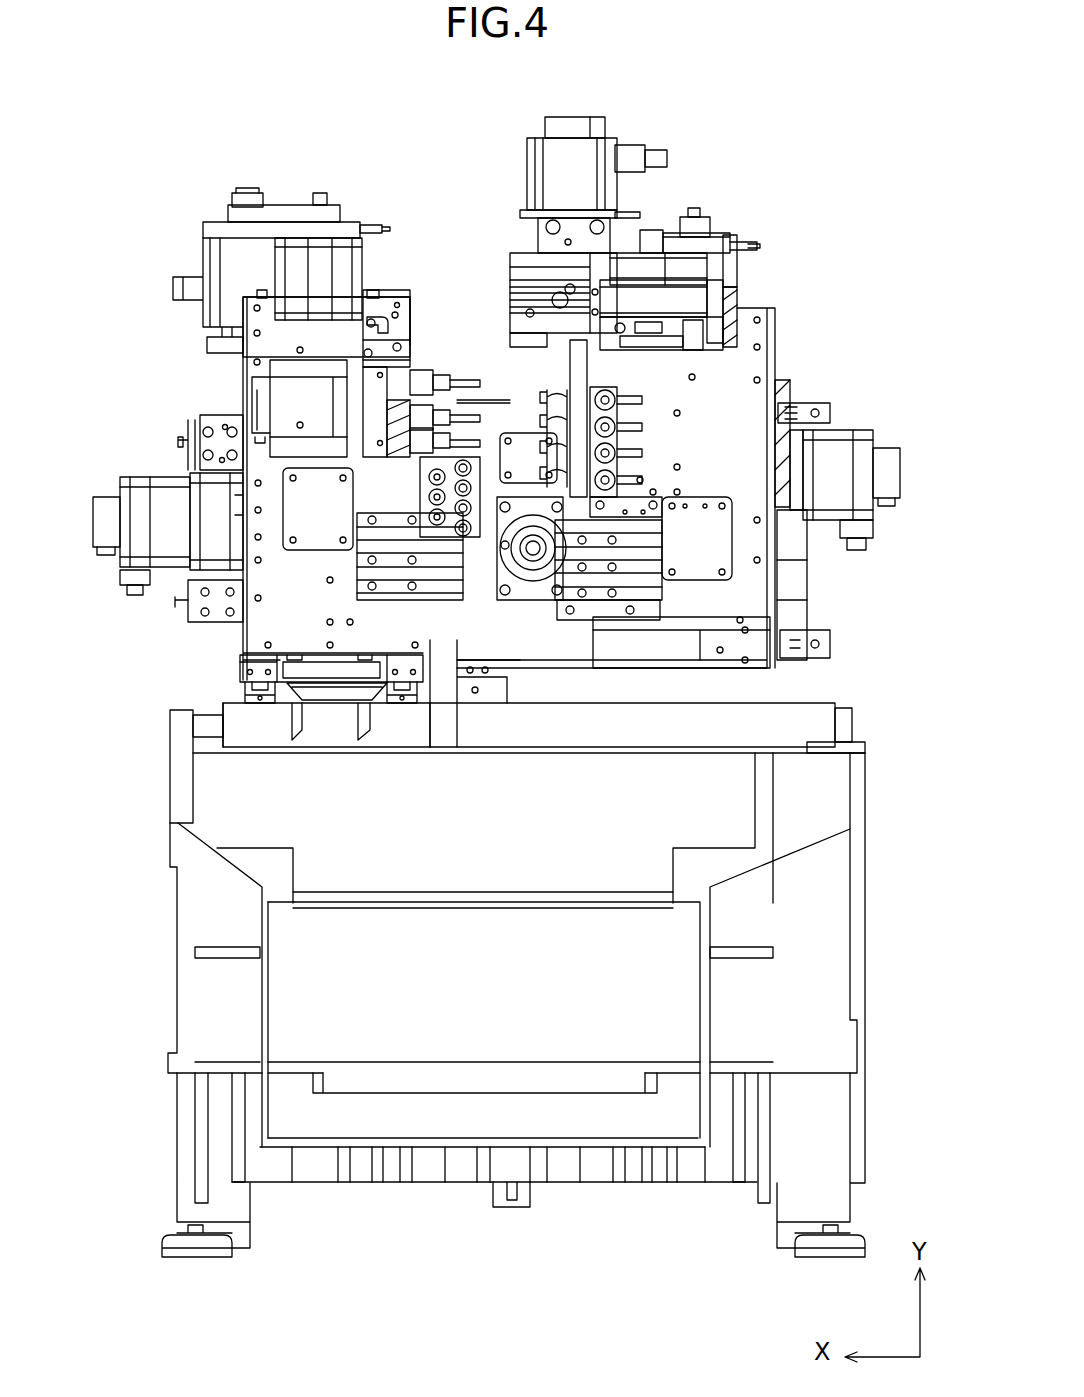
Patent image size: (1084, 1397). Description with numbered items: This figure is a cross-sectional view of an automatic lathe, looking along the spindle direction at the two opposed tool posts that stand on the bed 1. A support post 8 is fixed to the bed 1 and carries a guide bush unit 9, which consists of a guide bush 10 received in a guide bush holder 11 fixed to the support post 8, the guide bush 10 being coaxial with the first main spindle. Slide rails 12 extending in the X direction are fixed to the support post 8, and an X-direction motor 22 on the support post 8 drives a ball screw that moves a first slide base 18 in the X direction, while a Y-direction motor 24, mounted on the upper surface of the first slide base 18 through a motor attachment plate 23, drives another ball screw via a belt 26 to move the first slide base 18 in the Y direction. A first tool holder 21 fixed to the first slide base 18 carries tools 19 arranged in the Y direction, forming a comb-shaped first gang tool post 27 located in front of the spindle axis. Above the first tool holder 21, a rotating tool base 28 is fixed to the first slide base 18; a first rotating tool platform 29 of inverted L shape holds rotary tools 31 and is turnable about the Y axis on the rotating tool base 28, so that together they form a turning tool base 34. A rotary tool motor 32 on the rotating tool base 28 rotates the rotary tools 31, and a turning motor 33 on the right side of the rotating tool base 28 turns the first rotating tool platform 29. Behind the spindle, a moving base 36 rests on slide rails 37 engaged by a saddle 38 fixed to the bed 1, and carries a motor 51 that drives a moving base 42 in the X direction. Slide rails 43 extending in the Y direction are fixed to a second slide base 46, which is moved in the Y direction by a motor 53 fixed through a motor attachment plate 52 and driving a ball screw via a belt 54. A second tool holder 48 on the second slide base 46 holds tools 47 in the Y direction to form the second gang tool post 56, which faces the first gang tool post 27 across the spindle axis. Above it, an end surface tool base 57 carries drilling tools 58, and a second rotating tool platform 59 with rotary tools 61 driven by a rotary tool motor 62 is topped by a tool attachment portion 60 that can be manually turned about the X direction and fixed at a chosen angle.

The bed 1 is at (808, 698).
The support post 8 is at (790, 590).
The guide bush unit 9 is at (572, 480).
The guide bush 10 is at (540, 560).
The guide bush holder 11 is at (505, 595).
The X1 slide rails 12 is at (820, 415).
The first slide base 18 is at (768, 360).
The tools 19 is at (650, 527).
The first tool holder 21 is at (653, 612).
The X1 motor 22 is at (860, 465).
The motor attachment plate 23 is at (677, 297).
The Y1 motor 24 is at (725, 275).
The belt 26 is at (668, 225).
The first gang tool post 27 is at (723, 652).
The rotating tool base 28 is at (520, 287).
The first rotating tool platform 29 is at (570, 372).
The rotary tools 31 is at (553, 400).
The S3 rotary tool motor 32 is at (590, 165).
The B1 motor 33 is at (715, 247).
The turning tool base 34 is at (658, 416).
The Z2 moving base 36 is at (250, 670).
The Z2 slide rails 37 is at (255, 686).
The saddle 38 is at (253, 720).
The X2 moving base 42 is at (215, 420).
The Y2 slide rails 43 is at (377, 290).
The second slide base 46 is at (268, 330).
The tools 47 is at (365, 565).
The second tool holder 48 is at (375, 620).
The X2 motor 51 is at (140, 495).
The motor attachment plate 52 is at (258, 222).
The Y2 motor 53 is at (340, 275).
The belt 54 is at (290, 215).
The second gang tool post 56 is at (253, 607).
The end surface tool base 57 is at (380, 390).
The drilling tools 58 is at (370, 490).
The second rotating tool platform 59 is at (373, 317).
The tool attachment portion 60 is at (415, 368).
The rotary tools 61 is at (452, 378).
The S4 rotary tool motor 62 is at (288, 388).